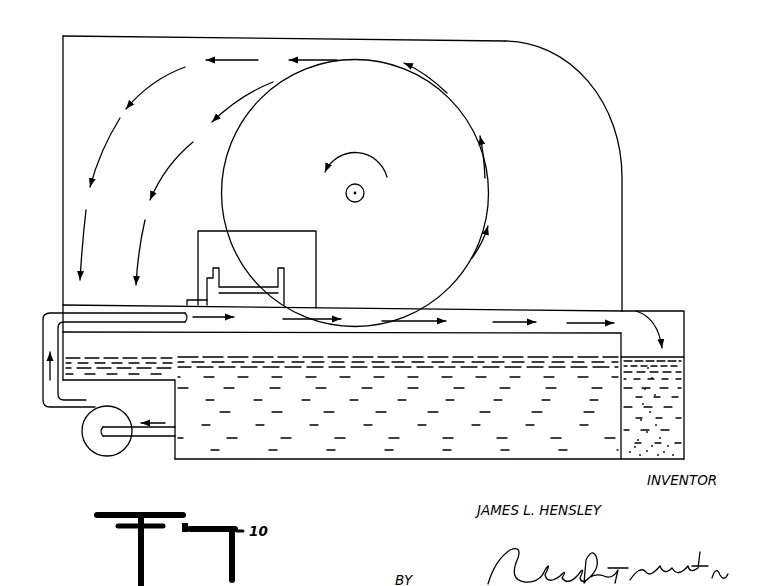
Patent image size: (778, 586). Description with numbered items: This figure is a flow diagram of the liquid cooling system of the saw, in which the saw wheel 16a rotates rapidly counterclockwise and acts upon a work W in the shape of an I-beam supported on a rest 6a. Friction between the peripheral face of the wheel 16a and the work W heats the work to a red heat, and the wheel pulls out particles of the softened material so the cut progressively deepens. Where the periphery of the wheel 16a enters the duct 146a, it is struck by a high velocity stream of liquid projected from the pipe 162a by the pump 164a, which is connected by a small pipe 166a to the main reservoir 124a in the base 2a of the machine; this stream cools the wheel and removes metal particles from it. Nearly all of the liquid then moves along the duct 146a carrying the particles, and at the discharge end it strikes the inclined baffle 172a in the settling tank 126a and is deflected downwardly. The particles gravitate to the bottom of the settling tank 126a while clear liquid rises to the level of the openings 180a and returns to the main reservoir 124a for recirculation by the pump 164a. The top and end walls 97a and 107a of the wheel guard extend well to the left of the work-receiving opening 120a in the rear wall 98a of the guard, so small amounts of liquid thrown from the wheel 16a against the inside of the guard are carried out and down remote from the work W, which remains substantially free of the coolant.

The top wall of wheel guard 97a is at (178, 37).
The end wall of wheel guard 107a is at (64, 124).
The rear wall of wheel guard 98a is at (537, 94).
The saw wheel 16a is at (446, 220).
The work-receiving opening 120a is at (218, 232).
The work W is at (228, 283).
The workpiece support 6a is at (197, 300).
The duct 146a is at (548, 319).
The base 2a is at (397, 460).
The main reservoir 124a is at (317, 448).
The settling tank 126a is at (687, 355).
The openings 180a is at (628, 356).
The inclined baffle 172a is at (642, 313).
The pipe 162a is at (55, 312).
The pump 164a is at (82, 437).
The small pipe 166a is at (136, 437).